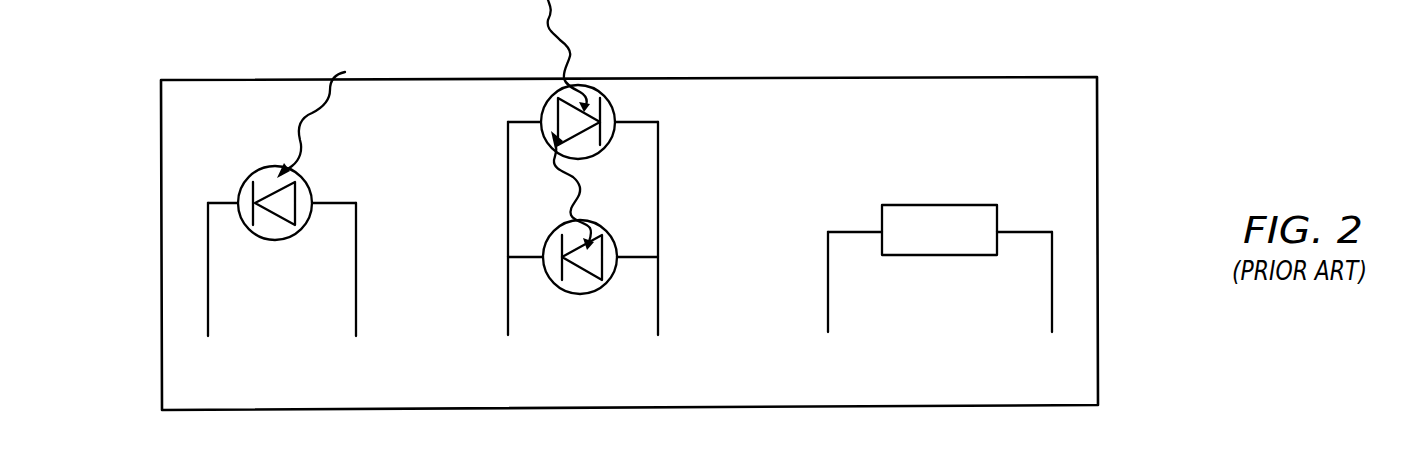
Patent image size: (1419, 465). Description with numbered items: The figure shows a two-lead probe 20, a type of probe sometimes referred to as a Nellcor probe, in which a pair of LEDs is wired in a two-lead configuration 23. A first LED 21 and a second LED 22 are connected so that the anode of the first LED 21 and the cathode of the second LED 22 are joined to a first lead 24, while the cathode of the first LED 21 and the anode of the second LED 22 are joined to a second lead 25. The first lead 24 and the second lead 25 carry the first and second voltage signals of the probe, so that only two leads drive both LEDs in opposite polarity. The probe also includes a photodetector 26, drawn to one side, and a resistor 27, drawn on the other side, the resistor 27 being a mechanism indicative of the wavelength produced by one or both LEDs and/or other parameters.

The 2-lead probe 20 is at (629, 209).
The first LED 21 is at (587, 79).
The second LED 22 is at (583, 241).
The 2-lead configuration 23 is at (605, 303).
The first lead 24 is at (498, 247).
The second lead 25 is at (676, 247).
The photodetector 26 is at (282, 204).
The resistor 27 is at (940, 268).